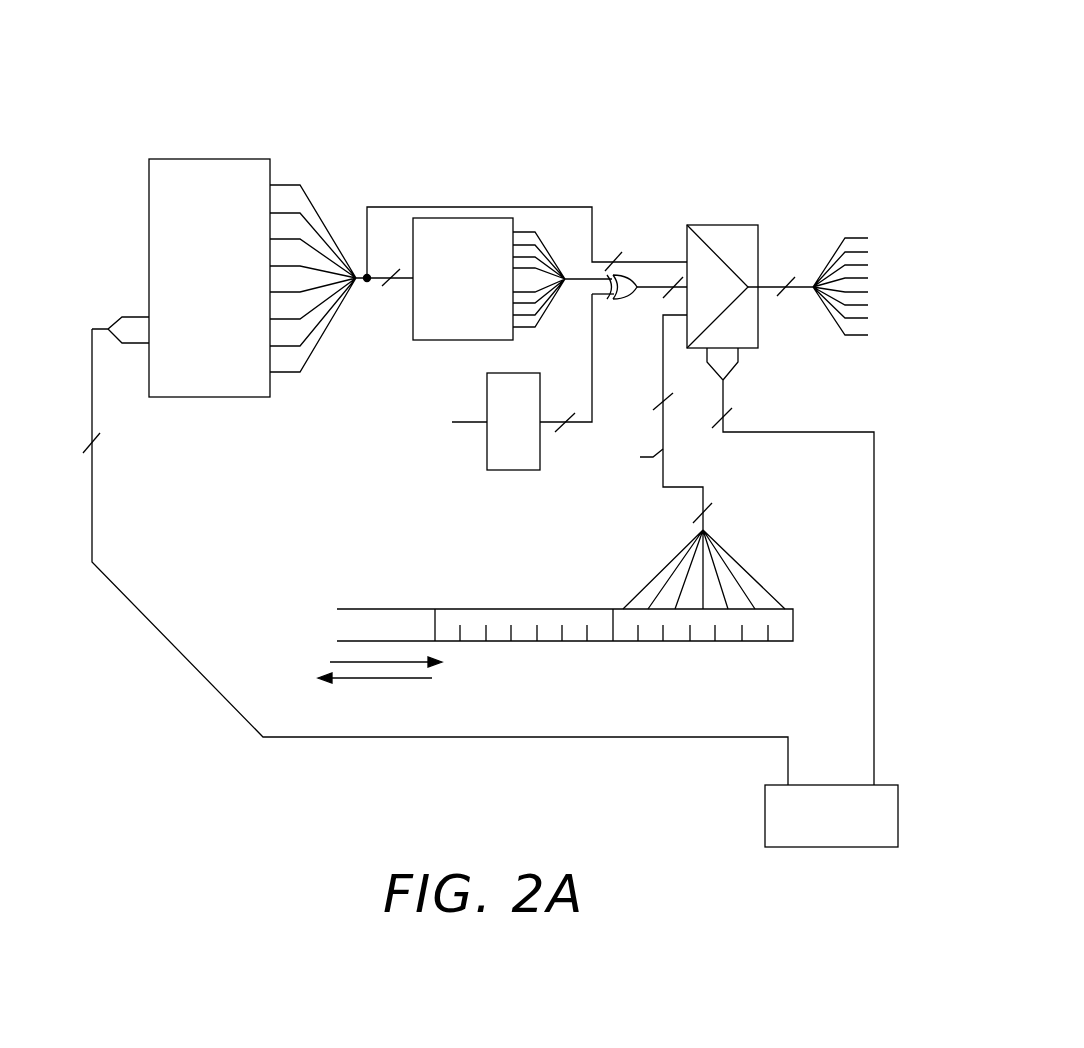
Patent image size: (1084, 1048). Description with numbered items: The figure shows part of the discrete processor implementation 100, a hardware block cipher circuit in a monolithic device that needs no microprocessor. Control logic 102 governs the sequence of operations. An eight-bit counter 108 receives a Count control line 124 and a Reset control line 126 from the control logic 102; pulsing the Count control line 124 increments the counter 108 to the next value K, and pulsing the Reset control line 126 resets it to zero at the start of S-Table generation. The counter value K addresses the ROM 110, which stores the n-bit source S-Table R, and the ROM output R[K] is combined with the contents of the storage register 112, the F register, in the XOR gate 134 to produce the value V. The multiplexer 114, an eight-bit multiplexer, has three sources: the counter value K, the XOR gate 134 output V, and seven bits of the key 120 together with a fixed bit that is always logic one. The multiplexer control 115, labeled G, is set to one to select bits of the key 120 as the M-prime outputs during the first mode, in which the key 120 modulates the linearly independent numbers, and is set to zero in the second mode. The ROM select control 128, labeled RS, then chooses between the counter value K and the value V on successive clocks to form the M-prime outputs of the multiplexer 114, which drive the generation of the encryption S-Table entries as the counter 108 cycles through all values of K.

The discrete processor implementation 100 is at (340, 62).
The control logic 102 is at (765, 812).
The counter 108 is at (205, 158).
The ROM 110 is at (480, 218).
The storage register 112 is at (517, 472).
The multiplexer 114 is at (715, 225).
The multiplexer control 115 is at (714, 370).
The key 120 is at (760, 645).
The Count control line 124 is at (137, 314).
The Reset control line 126 is at (135, 346).
The ROM select control 128 is at (740, 360).
The XOR gate 134 is at (619, 299).